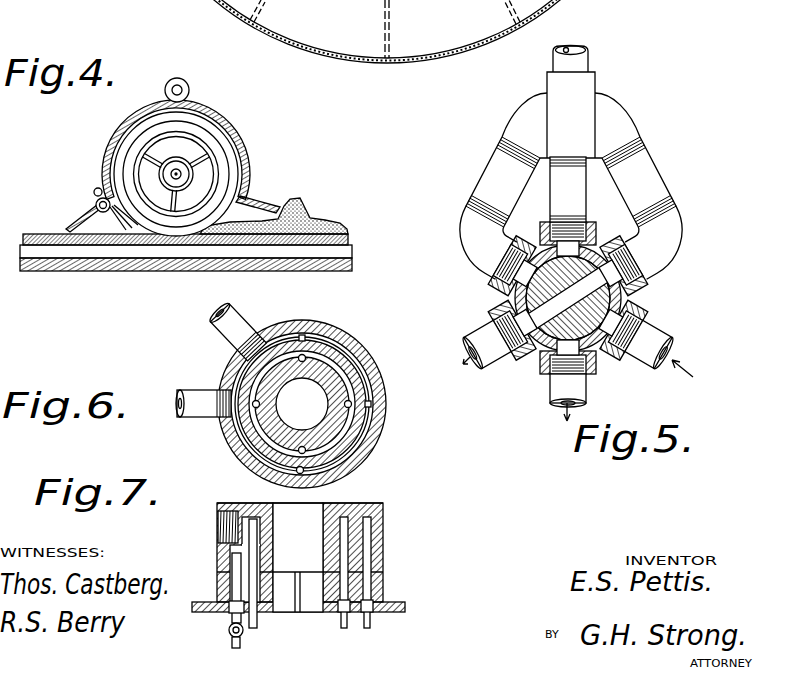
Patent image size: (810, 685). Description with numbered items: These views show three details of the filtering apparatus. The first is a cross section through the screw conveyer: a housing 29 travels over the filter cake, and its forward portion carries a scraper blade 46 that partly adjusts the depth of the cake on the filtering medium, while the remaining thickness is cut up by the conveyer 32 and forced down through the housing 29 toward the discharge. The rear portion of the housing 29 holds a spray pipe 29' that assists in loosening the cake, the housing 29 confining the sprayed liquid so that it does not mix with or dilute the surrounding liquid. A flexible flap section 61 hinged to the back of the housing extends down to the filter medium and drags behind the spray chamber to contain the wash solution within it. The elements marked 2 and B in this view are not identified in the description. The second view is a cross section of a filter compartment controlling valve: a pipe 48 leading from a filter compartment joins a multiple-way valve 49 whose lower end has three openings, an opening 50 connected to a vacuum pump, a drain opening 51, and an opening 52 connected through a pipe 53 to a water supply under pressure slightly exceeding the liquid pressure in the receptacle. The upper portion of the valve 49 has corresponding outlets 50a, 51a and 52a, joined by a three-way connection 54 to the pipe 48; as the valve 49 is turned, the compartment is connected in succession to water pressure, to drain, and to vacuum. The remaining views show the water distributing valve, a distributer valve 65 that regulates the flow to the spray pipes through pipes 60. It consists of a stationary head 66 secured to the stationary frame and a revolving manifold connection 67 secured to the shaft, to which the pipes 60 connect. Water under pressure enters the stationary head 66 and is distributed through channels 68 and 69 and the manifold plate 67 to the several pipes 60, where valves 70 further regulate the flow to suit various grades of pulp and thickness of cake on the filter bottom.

In FIG. 4, the base plank 2 is at (181, 269).
In FIG. 4, the bed board B is at (100, 246).
In FIG. 4, the housing 29 is at (191, 145).
In FIG. 4, the spray pipe 29' is at (91, 200).
In FIG. 4, the conveyer 32 is at (200, 131).
In FIG. 4, the scraper blade 46 is at (278, 203).
In FIG. 4, the flexible flap section 61 is at (83, 227).
In FIG. 5, the pipe 48 is at (571, 62).
In FIG. 5, the multiple-way valve 49 is at (616, 297).
In FIG. 5, the opening 50 is at (494, 337).
In FIG. 5, the outlet 50a is at (614, 258).
In FIG. 5, the drain opening 51 is at (551, 389).
In FIG. 5, the outlet 51a is at (588, 221).
In FIG. 5, the opening 52 is at (648, 324).
In FIG. 5, the outlet 52a is at (516, 261).
In FIG. 5, the pipe 53 is at (654, 341).
In FIG. 5, the three-way connection 54 is at (579, 111).
In FIG. 6, the pipes 60 is at (303, 354).
In FIG. 7, the pipes 60 is at (367, 627).
In FIG. 7, the distributer valve 65 is at (364, 505).
In FIG. 6, the stationary head 66 is at (380, 427).
In FIG. 7, the stationary head 66 is at (384, 510).
In FIG. 7, the revolving manifold connection 67 is at (384, 586).
In FIG. 6, the channel 68 is at (346, 388).
In FIG. 7, the channel 68 is at (344, 541).
In FIG. 6, the channel 69 is at (351, 358).
In FIG. 7, the channel 69 is at (364, 554).
In FIG. 7, the valves 70 is at (244, 634).